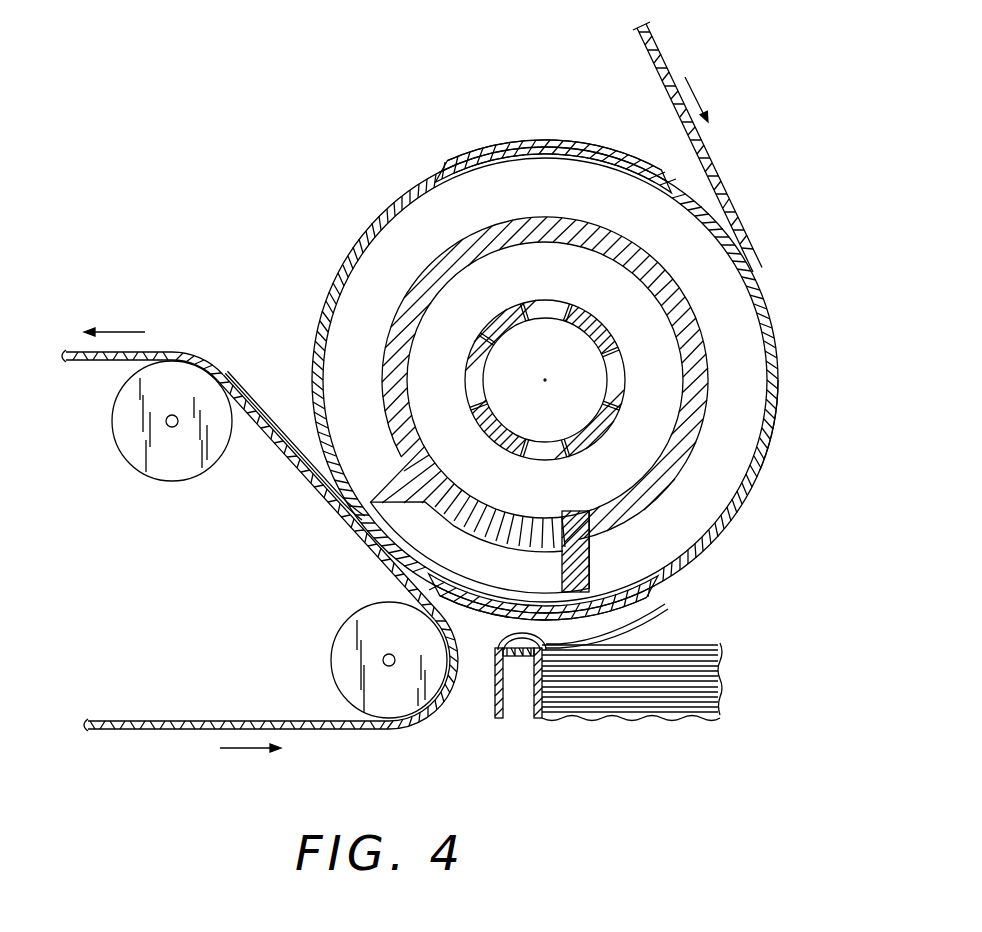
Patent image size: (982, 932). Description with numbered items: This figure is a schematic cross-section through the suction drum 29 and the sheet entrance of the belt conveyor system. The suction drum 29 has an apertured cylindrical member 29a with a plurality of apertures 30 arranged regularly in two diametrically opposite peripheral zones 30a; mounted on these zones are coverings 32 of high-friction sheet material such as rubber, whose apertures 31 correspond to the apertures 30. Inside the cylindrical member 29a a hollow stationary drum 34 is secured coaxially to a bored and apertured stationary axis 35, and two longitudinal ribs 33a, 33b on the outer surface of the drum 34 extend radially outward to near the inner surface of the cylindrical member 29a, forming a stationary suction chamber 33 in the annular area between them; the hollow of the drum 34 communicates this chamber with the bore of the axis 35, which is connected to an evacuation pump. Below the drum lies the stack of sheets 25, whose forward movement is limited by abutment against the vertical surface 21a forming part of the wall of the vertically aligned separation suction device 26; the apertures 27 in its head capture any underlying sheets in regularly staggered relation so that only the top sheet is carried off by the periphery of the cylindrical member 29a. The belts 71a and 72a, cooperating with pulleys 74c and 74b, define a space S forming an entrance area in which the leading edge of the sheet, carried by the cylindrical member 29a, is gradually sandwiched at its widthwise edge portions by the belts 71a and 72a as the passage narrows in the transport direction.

The vertical surface 21a is at (572, 720).
The sheets 25 is at (705, 645).
The separation suction device 26 is at (494, 698).
The apertures 27 is at (530, 667).
The suction drum 29 is at (362, 219).
The cylindrical member 29a is at (776, 427).
The apertures 30 is at (595, 162).
The peripheral zones 30a is at (559, 166).
The apertures 31 is at (598, 150).
The coverings 32 is at (575, 142).
The stationary suction chamber 33 is at (498, 563).
The longitudinal rib 33a is at (588, 552).
The longitudinal rib 33b is at (398, 528).
The hollow stationary drum 34 is at (680, 384).
The stationary axis 35 is at (512, 312).
The belts 71a is at (711, 160).
The belts 72a is at (232, 722).
The pulley 74b is at (160, 478).
The pulley 74c is at (331, 655).
The space S is at (378, 551).